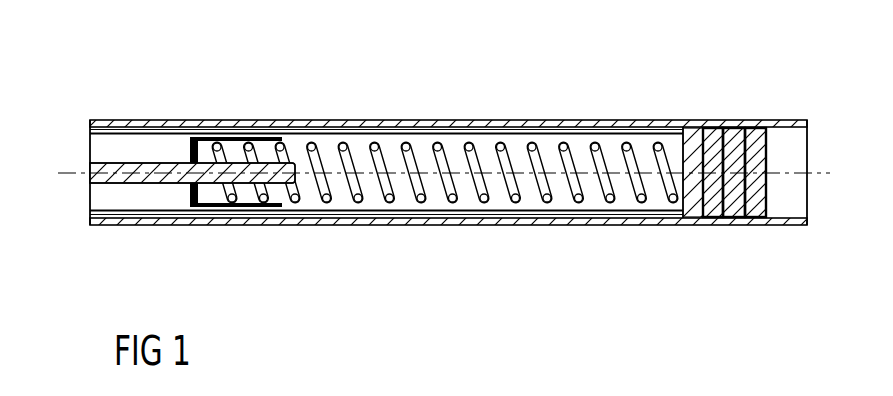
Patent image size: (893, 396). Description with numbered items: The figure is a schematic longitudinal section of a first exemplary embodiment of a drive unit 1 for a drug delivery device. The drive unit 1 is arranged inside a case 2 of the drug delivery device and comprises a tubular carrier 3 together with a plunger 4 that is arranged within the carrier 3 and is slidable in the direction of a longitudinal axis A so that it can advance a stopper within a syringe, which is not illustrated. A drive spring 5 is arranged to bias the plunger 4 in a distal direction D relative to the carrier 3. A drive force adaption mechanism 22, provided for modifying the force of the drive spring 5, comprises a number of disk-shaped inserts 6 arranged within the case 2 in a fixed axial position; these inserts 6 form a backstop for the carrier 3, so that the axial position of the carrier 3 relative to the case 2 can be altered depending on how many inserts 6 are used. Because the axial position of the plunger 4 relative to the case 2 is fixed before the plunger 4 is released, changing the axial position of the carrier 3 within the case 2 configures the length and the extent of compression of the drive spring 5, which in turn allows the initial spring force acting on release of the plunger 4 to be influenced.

The drive unit 1 is at (577, 108).
The case 2 is at (237, 127).
The tubular carrier 3 is at (468, 130).
The plunger 4 is at (133, 176).
The drive spring 5 is at (422, 199).
The disk-shaped inserts 6 is at (715, 210).
The drive force adaption mechanism 22 is at (770, 145).
The distal direction D is at (435, 188).
The longitudinal axis A is at (815, 173).